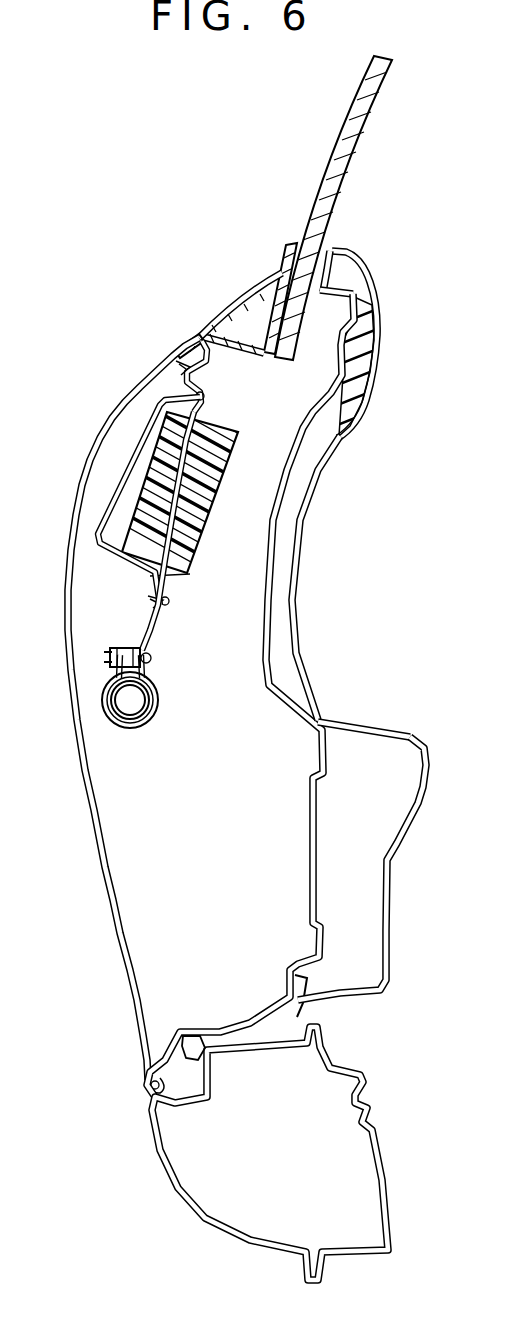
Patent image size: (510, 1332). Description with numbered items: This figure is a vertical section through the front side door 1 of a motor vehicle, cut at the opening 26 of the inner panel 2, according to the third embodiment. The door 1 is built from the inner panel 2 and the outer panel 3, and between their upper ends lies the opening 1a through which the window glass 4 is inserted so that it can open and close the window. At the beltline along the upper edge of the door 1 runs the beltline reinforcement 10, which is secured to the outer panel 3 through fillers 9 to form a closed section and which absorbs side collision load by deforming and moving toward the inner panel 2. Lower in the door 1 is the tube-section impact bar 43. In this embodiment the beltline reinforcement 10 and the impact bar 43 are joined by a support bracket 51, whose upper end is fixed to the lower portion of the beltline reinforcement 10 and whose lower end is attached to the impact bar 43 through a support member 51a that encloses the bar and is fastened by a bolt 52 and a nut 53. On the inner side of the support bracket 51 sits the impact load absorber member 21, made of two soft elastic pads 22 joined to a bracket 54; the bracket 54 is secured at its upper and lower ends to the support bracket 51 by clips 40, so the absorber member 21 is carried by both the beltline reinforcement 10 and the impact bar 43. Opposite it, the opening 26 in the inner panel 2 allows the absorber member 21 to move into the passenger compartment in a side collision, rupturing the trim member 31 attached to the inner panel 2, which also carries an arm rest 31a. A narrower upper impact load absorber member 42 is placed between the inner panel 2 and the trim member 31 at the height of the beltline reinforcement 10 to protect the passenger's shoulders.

The front side door 1 is at (190, 310).
The opening 1a is at (302, 248).
The inner panel 2 is at (318, 406).
The outer panel 3 is at (108, 424).
The window glass 4 is at (357, 155).
The filler 9 is at (184, 350).
The beltline reinforcement 10 is at (265, 360).
The impact load absorber member 21 is at (200, 489).
The pad 22 is at (206, 510).
The opening 26 is at (322, 442).
The trim member 31 is at (416, 728).
The arm rest 31a is at (353, 727).
The clip 40 is at (204, 397).
The upper impact load absorber member 42 is at (381, 353).
The impact bar 43 is at (128, 722).
The support bracket 51 is at (97, 533).
The support member 51a is at (158, 706).
The bolt 52 is at (153, 658).
The nut 53 is at (120, 650).
The bracket 54 is at (190, 575).